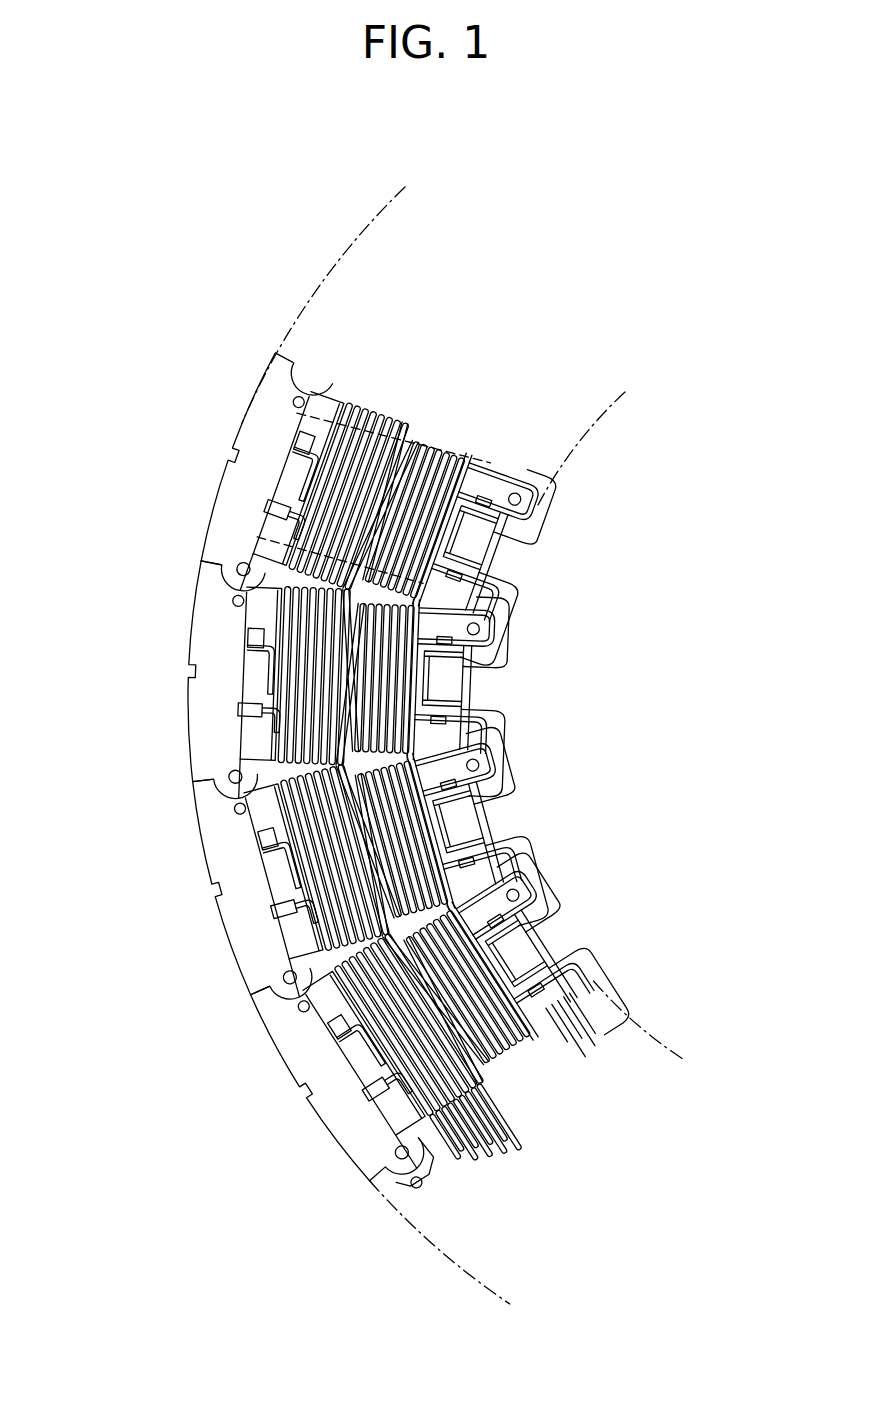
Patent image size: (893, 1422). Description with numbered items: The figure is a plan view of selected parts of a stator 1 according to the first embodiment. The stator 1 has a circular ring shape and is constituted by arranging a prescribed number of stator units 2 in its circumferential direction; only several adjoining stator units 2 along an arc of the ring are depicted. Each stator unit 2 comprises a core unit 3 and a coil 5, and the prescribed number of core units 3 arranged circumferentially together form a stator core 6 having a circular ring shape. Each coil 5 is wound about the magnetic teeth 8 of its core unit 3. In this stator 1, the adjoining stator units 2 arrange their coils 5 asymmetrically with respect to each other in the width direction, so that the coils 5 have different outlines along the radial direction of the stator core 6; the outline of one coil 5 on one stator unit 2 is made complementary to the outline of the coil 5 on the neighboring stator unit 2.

The stator 1 is at (210, 224).
The stator unit 2 is at (192, 475).
The core unit 3 is at (268, 412).
The coil 5 is at (372, 410).
The stator core 6 is at (322, 296).
The magnetic teeth 8 is at (424, 440).